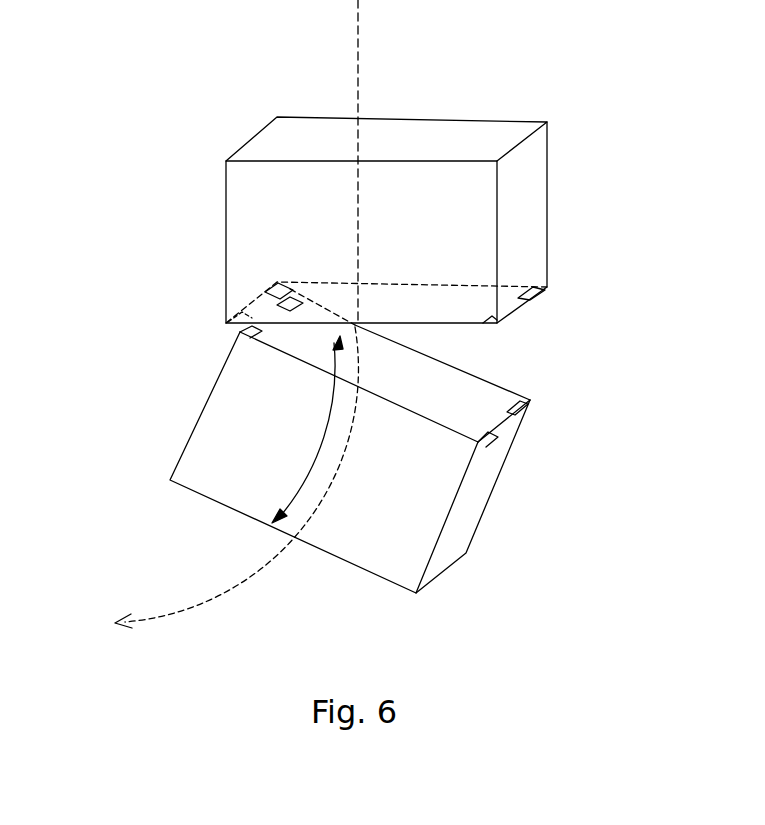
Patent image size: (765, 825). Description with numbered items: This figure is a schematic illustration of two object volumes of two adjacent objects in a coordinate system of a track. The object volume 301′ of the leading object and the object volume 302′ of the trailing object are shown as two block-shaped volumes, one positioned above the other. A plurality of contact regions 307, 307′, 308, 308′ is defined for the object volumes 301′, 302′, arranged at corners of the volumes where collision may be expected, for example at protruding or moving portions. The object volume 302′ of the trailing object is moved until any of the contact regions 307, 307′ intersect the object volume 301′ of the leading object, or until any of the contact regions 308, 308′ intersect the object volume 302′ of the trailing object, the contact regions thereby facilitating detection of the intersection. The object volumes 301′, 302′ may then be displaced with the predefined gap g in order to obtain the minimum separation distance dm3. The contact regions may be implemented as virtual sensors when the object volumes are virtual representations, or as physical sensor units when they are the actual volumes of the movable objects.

The object volume of the trailing object 302′ is at (265, 143).
The object volume of the leading object 301′ is at (203, 435).
The contact region 307′ is at (270, 288).
The contact region 308′ is at (282, 304).
The contact region 307 is at (547, 287).
The contact region 308 is at (525, 405).
The predefined gap g is at (215, 332).
The minimum separation distance dm3 is at (236, 477).